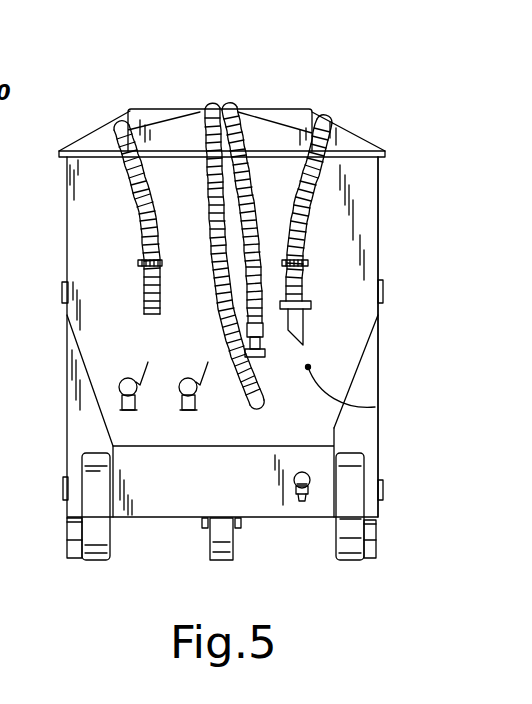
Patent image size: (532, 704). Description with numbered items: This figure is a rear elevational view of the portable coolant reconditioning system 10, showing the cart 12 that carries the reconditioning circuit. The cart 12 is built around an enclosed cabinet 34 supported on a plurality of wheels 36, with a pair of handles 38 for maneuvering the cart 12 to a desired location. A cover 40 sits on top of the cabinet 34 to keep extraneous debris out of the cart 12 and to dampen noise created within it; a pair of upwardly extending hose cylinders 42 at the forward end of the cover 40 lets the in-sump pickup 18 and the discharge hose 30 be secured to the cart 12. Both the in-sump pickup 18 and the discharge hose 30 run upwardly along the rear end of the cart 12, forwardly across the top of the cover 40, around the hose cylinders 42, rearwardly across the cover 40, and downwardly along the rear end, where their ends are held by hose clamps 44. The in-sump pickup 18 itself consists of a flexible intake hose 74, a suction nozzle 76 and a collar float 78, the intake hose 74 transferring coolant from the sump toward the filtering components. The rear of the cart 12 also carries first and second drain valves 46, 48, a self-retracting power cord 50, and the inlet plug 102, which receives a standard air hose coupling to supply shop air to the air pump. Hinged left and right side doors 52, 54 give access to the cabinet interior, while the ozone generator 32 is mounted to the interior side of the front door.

The portable coolant reconditioning system 10 is at (123, 79).
The cart 12 is at (132, 519).
The in-sump pickup 18 is at (302, 240).
The discharge hose 30 is at (143, 240).
The ozone generator 32 is at (0, 408).
The enclosed cabinet 34 is at (172, 520).
The wheels 36 is at (405, 575).
The handles 38 is at (13, 123).
The cover 40 is at (343, 137).
The hose cylinders 42 is at (248, 110).
The hose clamps 44 is at (140, 263).
The first drain valve 46 is at (125, 380).
The second drain valve 48 is at (182, 400).
The self-retracting power cord 50 is at (305, 490).
The left side door 52 is at (67, 326).
The right side door 54 is at (381, 355).
The intake hose 74 is at (316, 175).
The suction nozzle 76 is at (305, 325).
The collar float 78 is at (312, 305).
The inlet plug 102 is at (375, 407).